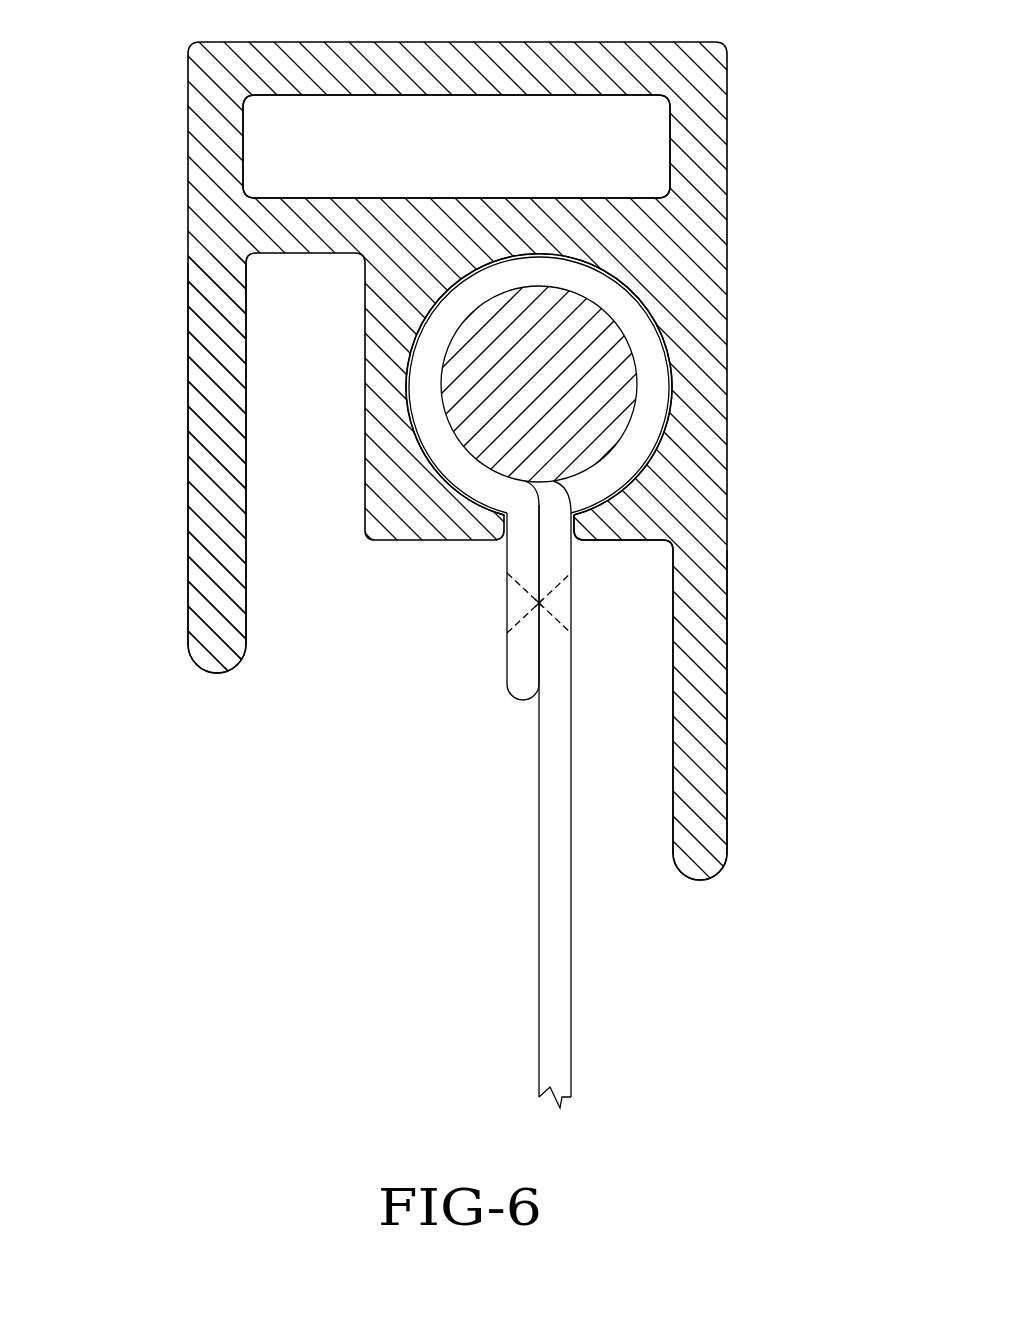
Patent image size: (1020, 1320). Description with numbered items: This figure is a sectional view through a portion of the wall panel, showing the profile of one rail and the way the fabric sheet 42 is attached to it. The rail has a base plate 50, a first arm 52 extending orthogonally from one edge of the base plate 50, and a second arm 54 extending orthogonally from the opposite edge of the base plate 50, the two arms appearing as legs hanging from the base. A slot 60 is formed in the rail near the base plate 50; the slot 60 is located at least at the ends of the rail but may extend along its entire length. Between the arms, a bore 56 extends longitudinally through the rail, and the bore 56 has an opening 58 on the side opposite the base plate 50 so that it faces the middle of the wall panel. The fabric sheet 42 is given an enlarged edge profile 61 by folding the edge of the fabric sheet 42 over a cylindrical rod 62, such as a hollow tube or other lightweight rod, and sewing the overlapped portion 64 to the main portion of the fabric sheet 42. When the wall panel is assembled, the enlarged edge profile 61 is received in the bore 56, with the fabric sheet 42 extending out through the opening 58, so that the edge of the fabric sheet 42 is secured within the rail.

The fabric sheet 42 is at (557, 1042).
The base plate 50 is at (440, 62).
The first arm 52 is at (208, 533).
The second arm 54 is at (708, 802).
The bore 56 is at (653, 318).
The opening 58 is at (580, 547).
The slot 60 is at (640, 146).
The enlarged edge profile 61 is at (613, 478).
The cylindrical rod 62 is at (600, 425).
The overlapped portion 64 is at (520, 550).